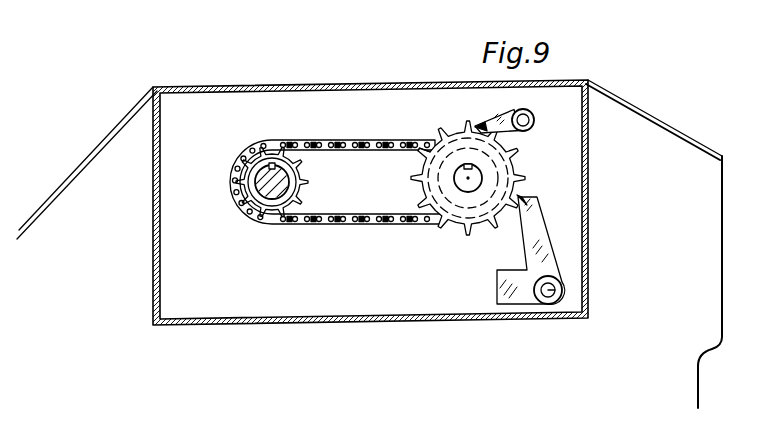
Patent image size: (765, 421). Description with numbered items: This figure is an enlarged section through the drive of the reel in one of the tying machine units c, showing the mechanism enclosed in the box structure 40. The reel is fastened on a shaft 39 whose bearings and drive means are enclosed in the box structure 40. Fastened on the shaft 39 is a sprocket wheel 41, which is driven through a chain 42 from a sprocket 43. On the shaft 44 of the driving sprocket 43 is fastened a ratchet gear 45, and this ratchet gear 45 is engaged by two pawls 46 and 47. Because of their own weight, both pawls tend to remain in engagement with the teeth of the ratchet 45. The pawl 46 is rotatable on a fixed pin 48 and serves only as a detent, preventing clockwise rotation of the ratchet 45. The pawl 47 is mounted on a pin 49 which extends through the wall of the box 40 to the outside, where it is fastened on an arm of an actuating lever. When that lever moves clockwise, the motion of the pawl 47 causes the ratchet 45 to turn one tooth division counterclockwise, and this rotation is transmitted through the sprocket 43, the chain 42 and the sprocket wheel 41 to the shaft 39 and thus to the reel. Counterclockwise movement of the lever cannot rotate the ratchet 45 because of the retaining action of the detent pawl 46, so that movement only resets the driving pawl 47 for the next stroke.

The tying machine unit C is at (107, 133).
The shaft 39 is at (263, 191).
The box structure 40 is at (409, 83).
The sprocket wheel 41 is at (310, 184).
The chain 42 is at (347, 141).
The sprocket 43 is at (502, 173).
The shaft 44 is at (467, 181).
The ratchet gear 45 is at (414, 172).
The pawl 46 is at (496, 114).
The pawl 47 is at (541, 234).
The fixed pin 48 is at (536, 121).
The pin 49 is at (563, 291).